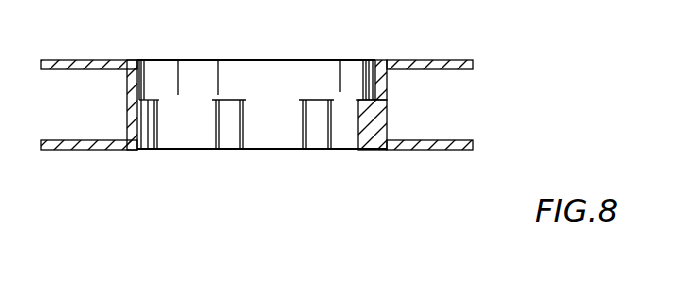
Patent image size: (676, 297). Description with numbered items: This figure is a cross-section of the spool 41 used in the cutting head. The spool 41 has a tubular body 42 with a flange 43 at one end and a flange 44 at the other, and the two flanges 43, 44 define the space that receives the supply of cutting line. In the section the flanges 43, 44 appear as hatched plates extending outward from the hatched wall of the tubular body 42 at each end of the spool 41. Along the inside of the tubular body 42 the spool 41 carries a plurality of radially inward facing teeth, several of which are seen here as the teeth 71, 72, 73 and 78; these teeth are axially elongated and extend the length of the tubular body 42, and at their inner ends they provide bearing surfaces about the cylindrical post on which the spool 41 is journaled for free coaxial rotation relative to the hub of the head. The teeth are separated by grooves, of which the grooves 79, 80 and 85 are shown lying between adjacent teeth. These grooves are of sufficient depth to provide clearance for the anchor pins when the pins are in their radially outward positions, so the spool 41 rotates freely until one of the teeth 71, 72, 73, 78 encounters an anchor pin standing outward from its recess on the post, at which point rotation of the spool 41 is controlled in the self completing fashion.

The spool 41 is at (89, 105).
The tubular body 42 is at (127, 80).
The flange 43 is at (63, 60).
The flange 44 is at (67, 150).
The tooth 71 is at (322, 98).
The tooth 72 is at (232, 98).
The tooth 73 is at (147, 100).
The tooth 78 is at (414, 105).
The groove 79 is at (284, 95).
The groove 80 is at (199, 85).
The groove 85 is at (365, 75).